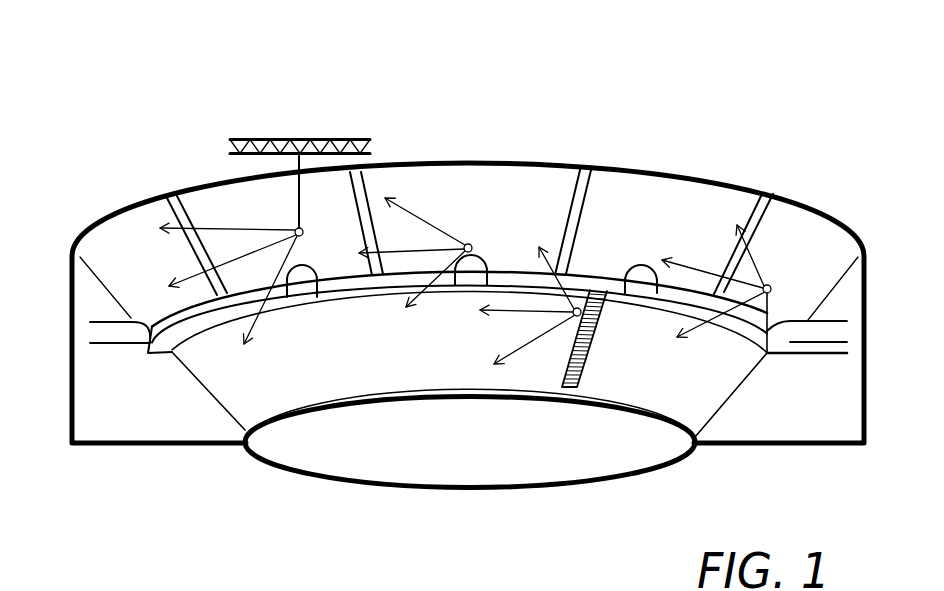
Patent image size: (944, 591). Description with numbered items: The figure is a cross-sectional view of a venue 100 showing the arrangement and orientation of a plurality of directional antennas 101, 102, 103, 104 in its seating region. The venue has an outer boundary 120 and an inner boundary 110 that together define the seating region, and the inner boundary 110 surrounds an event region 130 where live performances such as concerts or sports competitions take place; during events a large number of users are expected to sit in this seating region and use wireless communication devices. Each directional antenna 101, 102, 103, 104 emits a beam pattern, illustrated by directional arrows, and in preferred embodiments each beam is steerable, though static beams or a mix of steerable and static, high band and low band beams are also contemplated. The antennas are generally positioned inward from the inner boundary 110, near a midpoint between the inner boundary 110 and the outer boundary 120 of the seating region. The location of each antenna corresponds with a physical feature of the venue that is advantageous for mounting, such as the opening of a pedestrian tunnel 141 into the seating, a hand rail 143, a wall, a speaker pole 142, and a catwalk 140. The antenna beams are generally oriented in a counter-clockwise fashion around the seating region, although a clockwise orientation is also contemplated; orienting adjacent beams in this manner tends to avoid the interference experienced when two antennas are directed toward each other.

The stadium system 100 is at (80, 67).
The directional antenna 101 is at (770, 286).
The directional antenna 102 is at (580, 306).
The directional antenna 103 is at (471, 245).
The directional antenna 104 is at (303, 229).
The inner boundary 110 is at (340, 405).
The outer boundary 120 is at (200, 185).
The event region 130 is at (528, 455).
The catwalk 140 is at (353, 140).
The pedestrian tunnel 141 is at (470, 276).
The speaker pole 142 is at (773, 317).
The hand rail 143 is at (568, 349).